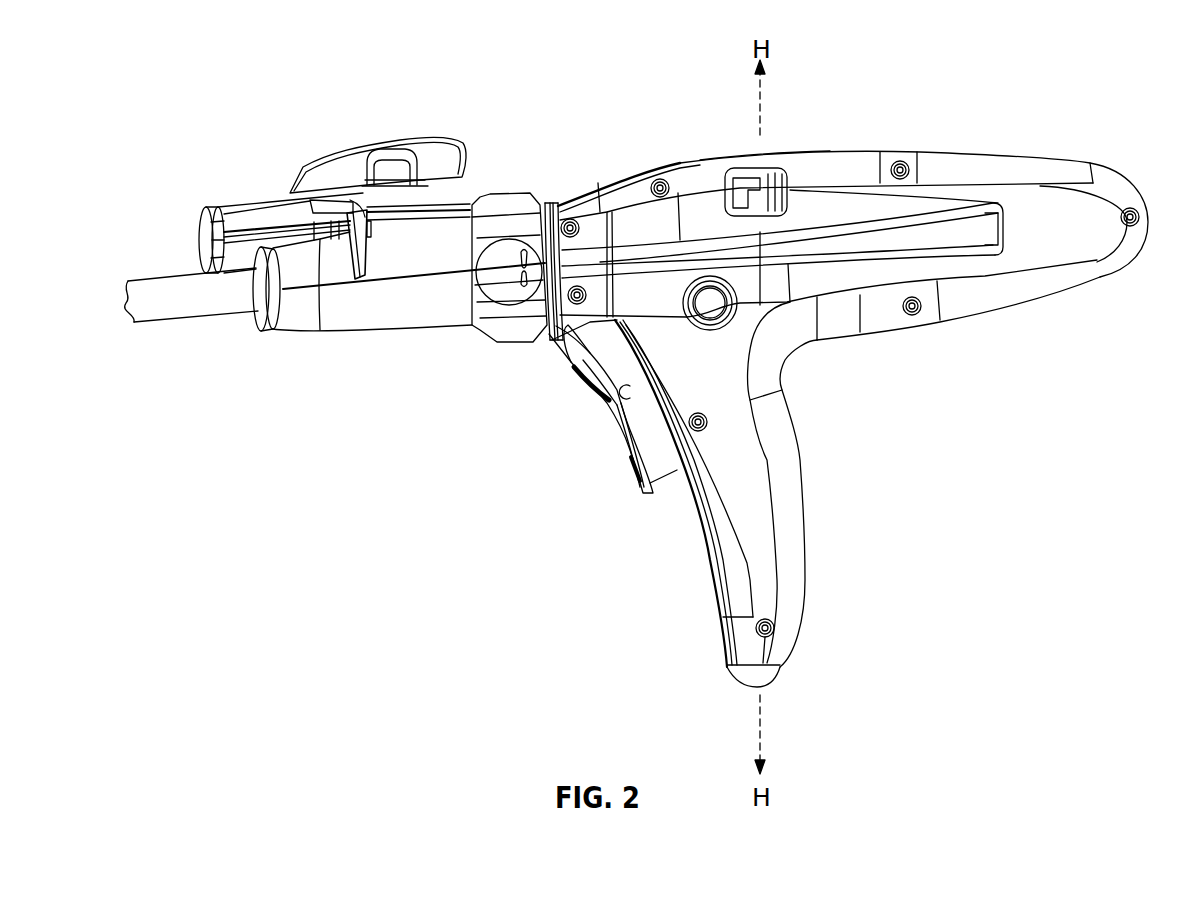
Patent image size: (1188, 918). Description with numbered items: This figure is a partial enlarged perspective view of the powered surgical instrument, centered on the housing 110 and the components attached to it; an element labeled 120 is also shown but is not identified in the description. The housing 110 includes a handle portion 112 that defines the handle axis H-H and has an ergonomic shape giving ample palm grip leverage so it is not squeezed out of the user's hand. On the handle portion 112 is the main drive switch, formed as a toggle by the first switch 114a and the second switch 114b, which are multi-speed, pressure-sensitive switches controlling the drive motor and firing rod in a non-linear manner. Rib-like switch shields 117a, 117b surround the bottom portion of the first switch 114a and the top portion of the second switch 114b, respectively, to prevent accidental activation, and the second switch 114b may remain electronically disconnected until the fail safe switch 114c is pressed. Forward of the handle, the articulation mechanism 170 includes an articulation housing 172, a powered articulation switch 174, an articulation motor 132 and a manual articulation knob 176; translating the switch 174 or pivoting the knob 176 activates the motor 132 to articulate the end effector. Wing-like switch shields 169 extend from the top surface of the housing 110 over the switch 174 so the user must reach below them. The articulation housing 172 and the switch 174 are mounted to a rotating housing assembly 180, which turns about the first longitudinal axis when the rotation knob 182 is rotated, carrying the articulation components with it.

The housing 110 is at (1028, 248).
The handle portion 112 is at (796, 513).
The first switch 114a is at (632, 470).
The second switch 114b is at (578, 376).
The fail safe switch 114c is at (717, 302).
The switch shield 117a is at (556, 350).
The switch shield 117b is at (673, 497).
The handle assembly 120 is at (864, 98).
The articulation motor 132 is at (253, 204).
The switch shields 169 is at (775, 152).
The articulation mechanism 170 is at (376, 178).
The articulation housing 172 is at (360, 316).
The powered articulation switch 174 is at (747, 160).
The manual articulation knob 176 is at (386, 108).
The rotating housing assembly 180 is at (518, 178).
The rotation knob 182 is at (497, 207).